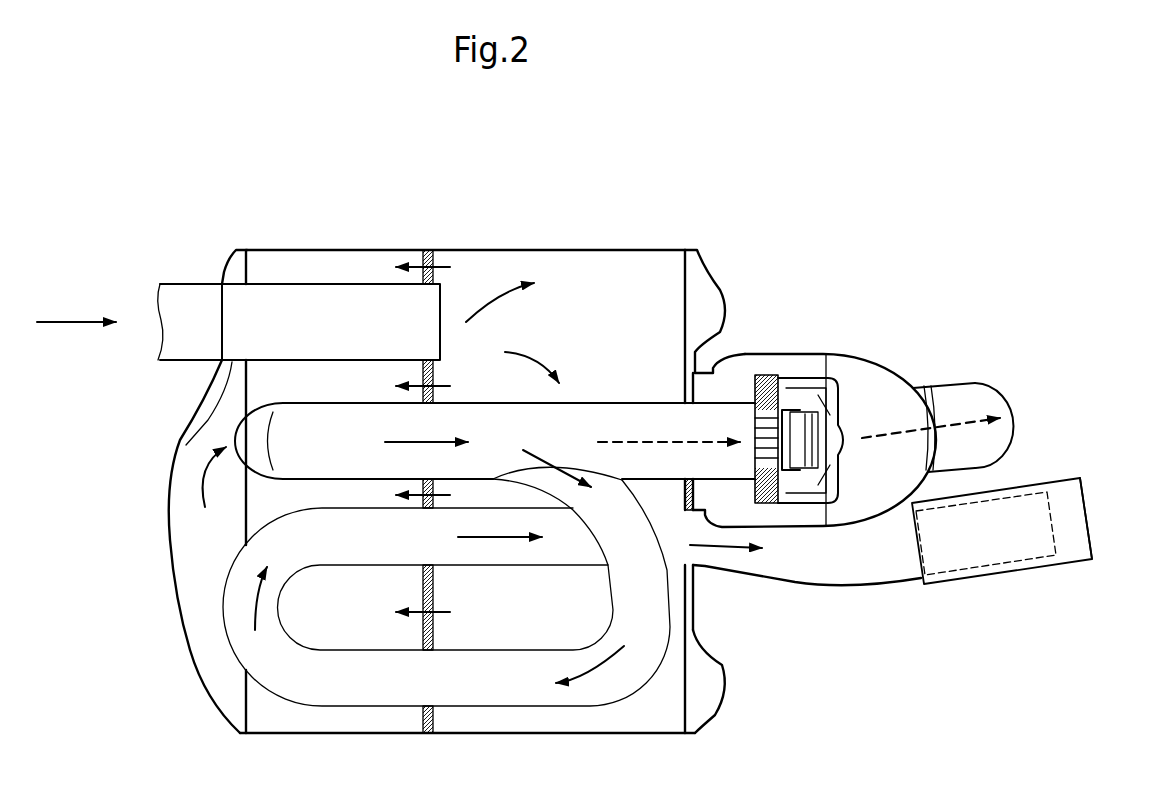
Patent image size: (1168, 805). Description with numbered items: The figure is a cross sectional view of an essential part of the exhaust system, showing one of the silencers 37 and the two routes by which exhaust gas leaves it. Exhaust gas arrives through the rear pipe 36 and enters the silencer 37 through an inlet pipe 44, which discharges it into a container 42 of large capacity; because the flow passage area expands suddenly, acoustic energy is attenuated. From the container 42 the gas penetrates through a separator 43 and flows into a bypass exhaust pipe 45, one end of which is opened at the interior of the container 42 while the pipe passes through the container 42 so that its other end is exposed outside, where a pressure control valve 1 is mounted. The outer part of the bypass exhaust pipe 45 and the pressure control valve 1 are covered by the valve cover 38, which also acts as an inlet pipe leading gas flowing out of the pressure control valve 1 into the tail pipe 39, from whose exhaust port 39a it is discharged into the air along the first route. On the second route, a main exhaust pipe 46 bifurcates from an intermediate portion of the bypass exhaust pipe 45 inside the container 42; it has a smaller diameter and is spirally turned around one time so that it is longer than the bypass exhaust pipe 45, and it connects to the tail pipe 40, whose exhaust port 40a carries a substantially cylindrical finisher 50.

The pressure control valve 1 is at (785, 372).
The rear pipe 36 is at (190, 298).
The silencer 37 is at (558, 192).
The valve cover 38 is at (870, 352).
The tail pipe 39 is at (975, 400).
The exhaust port 39a is at (1013, 418).
The tail pipe 40 is at (987, 567).
The exhaust port 40a is at (1056, 522).
The container 42 is at (500, 250).
The separator 43 is at (428, 250).
The inlet pipe 44 is at (325, 298).
The bypass exhaust pipe 45 is at (622, 413).
The main exhaust pipe 46 is at (524, 693).
The finisher 50 is at (1070, 556).